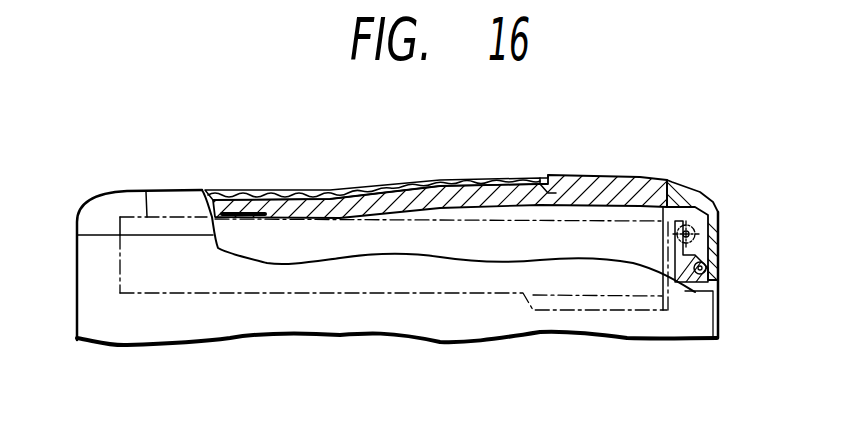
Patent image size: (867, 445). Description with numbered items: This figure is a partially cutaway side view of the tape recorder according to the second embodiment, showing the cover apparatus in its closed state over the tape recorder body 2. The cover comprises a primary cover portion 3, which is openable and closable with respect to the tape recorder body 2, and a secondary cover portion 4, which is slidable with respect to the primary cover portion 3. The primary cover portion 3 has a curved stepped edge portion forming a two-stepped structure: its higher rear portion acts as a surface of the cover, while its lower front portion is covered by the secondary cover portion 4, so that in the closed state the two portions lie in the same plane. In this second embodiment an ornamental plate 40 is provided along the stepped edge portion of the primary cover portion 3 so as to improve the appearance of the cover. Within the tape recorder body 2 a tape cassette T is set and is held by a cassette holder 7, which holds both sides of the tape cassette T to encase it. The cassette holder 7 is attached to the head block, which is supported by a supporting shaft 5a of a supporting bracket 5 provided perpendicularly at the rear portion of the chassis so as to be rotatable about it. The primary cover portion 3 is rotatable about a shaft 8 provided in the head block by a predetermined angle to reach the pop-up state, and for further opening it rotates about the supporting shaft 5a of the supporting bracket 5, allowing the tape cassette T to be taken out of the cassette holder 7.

The tape recorder body 2 is at (402, 325).
The primary cover portion 3 is at (653, 188).
The secondary cover portion 4 is at (447, 182).
The ornamental plate 40 is at (585, 177).
The supporting bracket 5 is at (687, 295).
The supporting shaft 5a is at (716, 262).
The cassette holder 7 is at (722, 202).
The shaft 8 is at (723, 222).
The tape cassette T is at (142, 188).